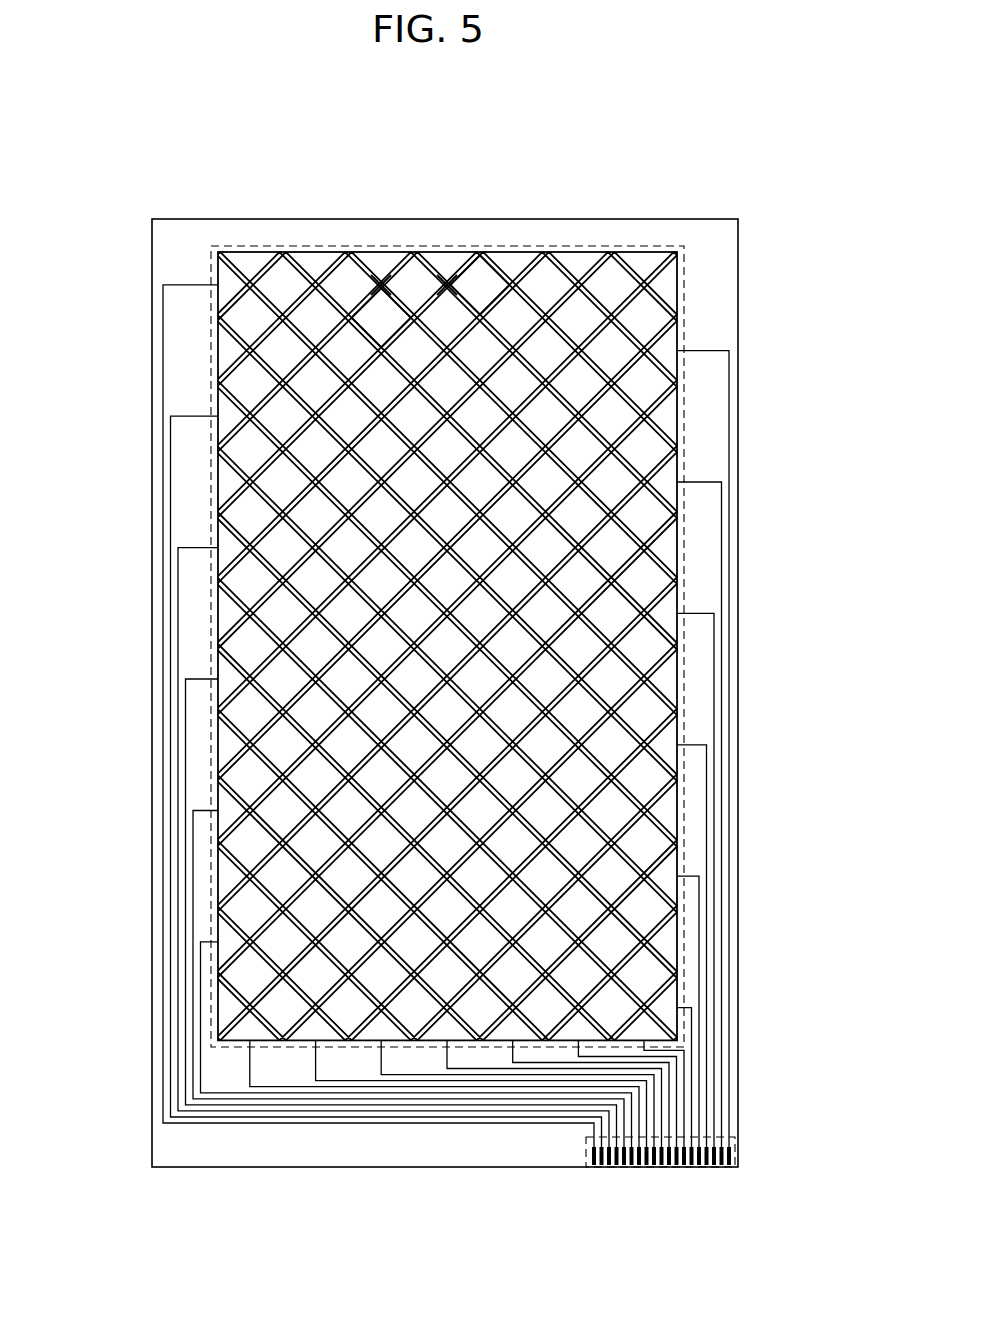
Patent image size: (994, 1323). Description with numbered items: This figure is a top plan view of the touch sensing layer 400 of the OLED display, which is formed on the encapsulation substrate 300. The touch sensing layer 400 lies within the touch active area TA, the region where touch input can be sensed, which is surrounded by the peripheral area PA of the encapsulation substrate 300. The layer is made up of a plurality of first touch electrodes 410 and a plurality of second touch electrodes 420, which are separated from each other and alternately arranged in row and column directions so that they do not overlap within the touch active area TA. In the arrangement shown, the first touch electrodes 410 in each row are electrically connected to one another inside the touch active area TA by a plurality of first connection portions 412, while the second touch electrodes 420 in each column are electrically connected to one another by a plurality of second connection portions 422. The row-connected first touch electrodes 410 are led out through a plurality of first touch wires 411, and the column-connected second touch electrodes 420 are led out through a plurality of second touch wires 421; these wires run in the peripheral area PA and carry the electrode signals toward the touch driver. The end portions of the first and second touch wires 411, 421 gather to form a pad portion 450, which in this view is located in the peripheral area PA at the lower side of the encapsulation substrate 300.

The encapsulation substrate 300 is at (738, 265).
The touch sensing layer 400 is at (367, 140).
The first touch electrodes 410 is at (485, 283).
The first touch wires 411 is at (163, 349).
The first connection portions 412 is at (447, 284).
The second touch electrodes 420 is at (383, 307).
The second touch wires 421 is at (446, 1053).
The second connection portions 422 is at (380, 284).
The pad portion 450 is at (587, 1150).
The touch active area TA is at (653, 247).
The peripheral area PA is at (173, 246).